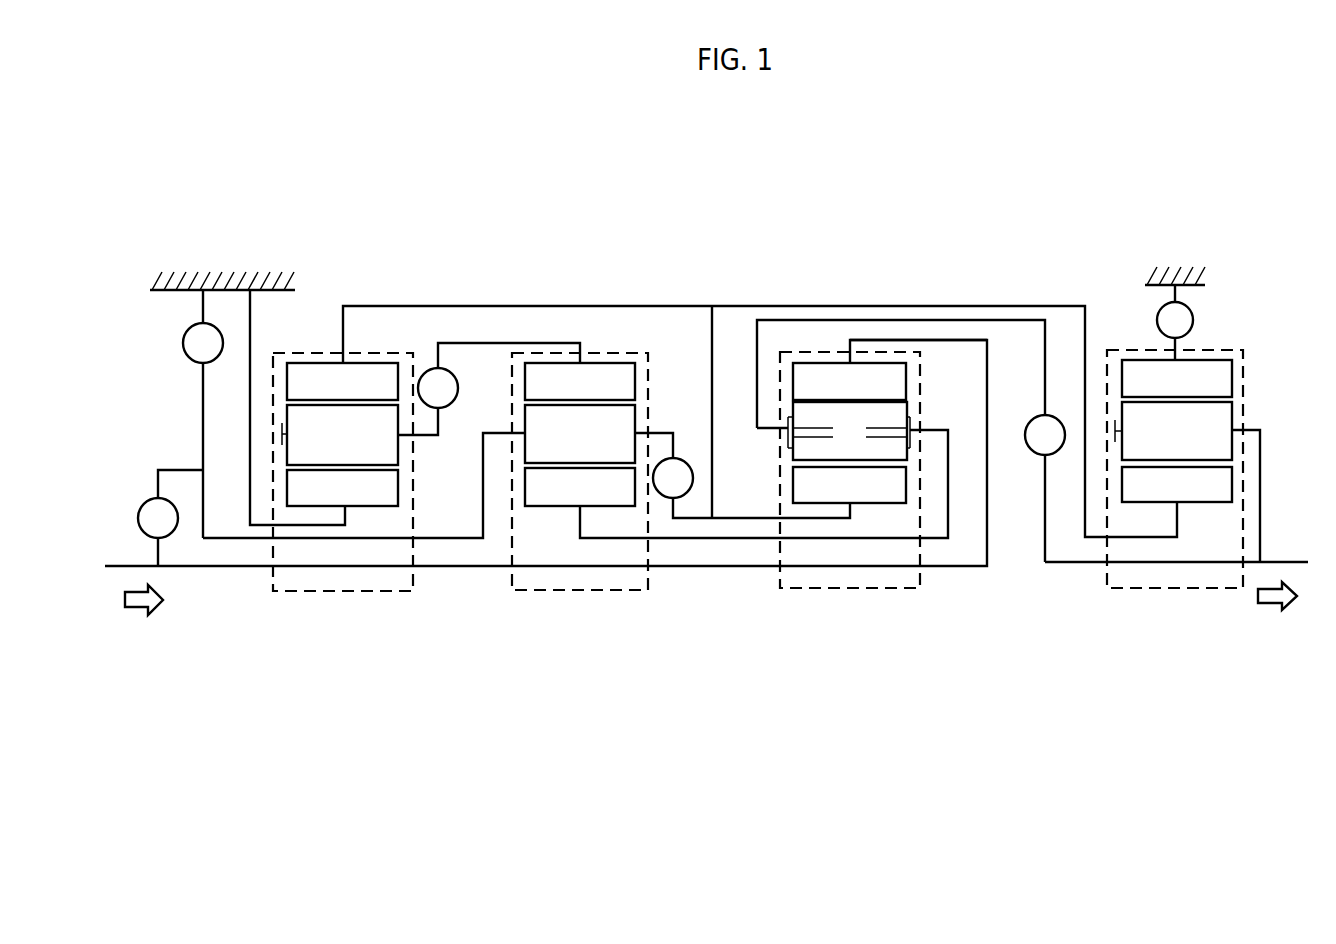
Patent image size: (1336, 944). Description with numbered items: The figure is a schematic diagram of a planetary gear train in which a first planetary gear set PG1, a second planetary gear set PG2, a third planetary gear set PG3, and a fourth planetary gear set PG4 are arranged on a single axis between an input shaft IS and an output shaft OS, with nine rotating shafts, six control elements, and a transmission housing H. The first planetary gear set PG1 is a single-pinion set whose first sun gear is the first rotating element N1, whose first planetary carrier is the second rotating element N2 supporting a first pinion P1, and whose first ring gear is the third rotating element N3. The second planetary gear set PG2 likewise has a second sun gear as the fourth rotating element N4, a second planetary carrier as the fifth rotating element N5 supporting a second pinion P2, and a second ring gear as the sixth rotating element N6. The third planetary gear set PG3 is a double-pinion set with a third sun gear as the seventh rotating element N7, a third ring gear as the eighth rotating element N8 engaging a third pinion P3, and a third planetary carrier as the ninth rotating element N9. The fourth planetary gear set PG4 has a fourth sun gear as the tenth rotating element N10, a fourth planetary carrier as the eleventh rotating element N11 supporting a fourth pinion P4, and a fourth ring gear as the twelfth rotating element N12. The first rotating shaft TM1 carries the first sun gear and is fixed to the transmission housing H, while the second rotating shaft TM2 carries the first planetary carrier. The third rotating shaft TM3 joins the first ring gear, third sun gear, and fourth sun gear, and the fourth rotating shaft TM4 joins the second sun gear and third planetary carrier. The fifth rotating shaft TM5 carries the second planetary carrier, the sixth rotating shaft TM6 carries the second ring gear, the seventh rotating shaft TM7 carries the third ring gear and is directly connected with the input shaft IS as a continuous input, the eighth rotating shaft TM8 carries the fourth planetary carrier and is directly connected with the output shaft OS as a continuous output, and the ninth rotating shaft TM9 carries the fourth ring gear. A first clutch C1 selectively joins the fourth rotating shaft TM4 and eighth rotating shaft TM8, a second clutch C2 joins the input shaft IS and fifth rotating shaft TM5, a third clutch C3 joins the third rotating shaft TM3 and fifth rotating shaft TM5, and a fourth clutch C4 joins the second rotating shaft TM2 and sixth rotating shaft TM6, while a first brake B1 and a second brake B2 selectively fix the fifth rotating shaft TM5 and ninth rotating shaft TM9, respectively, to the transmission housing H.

The transmission housing H is at (247, 270).
The input shaft IS is at (198, 570).
The output shaft OS is at (1285, 558).
The first planetary gear set PG1 is at (343, 522).
The second planetary gear set PG2 is at (580, 522).
The third planetary gear set PG3 is at (850, 521).
The fourth planetary gear set PG4 is at (1175, 520).
The first rotating element N1 is at (342, 488).
The second rotating element N2 is at (424, 440).
The third rotating element N3 is at (342, 381).
The fourth rotating element N4 is at (580, 487).
The fifth rotating element N5 is at (668, 430).
The sixth rotating element N6 is at (580, 381).
The seventh rotating element N7 is at (849, 485).
The eighth rotating element N8 is at (849, 381).
The ninth rotating element N9 is at (933, 430).
The tenth rotating element N10 is at (1177, 484).
The eleventh rotating element N11 is at (1250, 425).
The twelfth rotating element N12 is at (1177, 378).
The first pinion P1 is at (340, 435).
The second pinion P2 is at (580, 434).
The third pinion P3 is at (849, 431).
The fourth pinion P4 is at (1173, 431).
The first rotating shaft TM1 is at (294, 529).
The second rotating shaft TM2 is at (445, 420).
The third rotating shaft TM3 is at (689, 302).
The fourth rotating shaft TM4 is at (712, 546).
The fifth rotating shaft TM5 is at (435, 546).
The sixth rotating shaft TM6 is at (534, 338).
The seventh rotating shaft TM7 is at (880, 334).
The eighth rotating shaft TM8 is at (1056, 571).
The ninth rotating shaft TM9 is at (1166, 344).
The first clutch C1 is at (1045, 435).
The second clutch C2 is at (170, 518).
The third clutch C3 is at (673, 478).
The fourth clutch C4 is at (438, 388).
The first brake B1 is at (203, 414).
The second brake B2 is at (1175, 311).